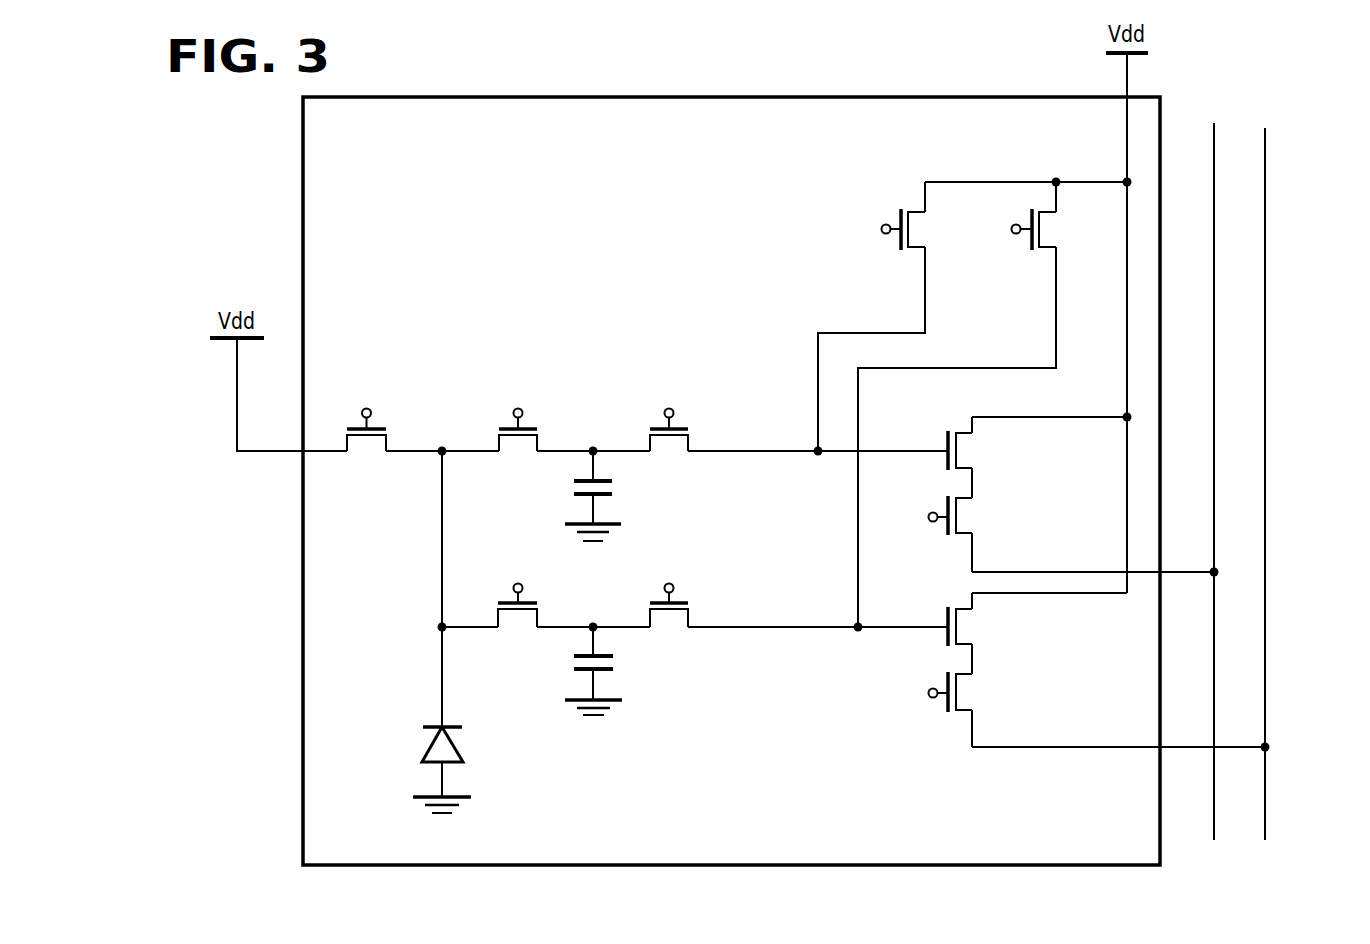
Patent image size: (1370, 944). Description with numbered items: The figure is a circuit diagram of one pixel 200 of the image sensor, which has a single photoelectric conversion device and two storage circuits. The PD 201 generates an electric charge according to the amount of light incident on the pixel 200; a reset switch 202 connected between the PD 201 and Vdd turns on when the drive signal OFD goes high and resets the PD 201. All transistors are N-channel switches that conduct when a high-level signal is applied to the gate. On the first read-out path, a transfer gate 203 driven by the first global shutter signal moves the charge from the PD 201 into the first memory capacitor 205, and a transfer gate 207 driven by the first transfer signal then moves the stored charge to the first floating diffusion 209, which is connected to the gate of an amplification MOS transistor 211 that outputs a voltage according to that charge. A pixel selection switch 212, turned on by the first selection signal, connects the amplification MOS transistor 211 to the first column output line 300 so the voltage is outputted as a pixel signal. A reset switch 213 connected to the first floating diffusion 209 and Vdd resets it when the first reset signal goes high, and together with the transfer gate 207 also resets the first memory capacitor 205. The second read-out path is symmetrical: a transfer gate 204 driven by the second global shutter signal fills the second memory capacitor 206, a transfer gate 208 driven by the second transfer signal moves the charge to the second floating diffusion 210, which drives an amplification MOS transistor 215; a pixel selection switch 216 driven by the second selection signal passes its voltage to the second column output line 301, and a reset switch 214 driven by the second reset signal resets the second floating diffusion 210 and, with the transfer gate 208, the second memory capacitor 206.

The pixel 200 is at (302, 820).
The PD 201 is at (410, 742).
The reset switch 202 is at (387, 431).
The transfer gate 203 is at (538, 431).
The transfer gate 204 is at (538, 607).
The MEM1 205 is at (622, 488).
The MEM2 206 is at (622, 664).
The transfer gate 207 is at (689, 432).
The transfer gate 208 is at (689, 607).
The FD1 209 is at (812, 447).
The FD2 210 is at (851, 622).
The amplification MOS transistor 211 is at (978, 452).
The pixel selection switch 212 is at (978, 518).
The reset switch 213 is at (912, 205).
The reset switch 214 is at (1048, 225).
The amplification MOS transistor 215 is at (978, 627).
The pixel selection switch 216 is at (978, 695).
The column output line VLINE1 300 is at (1215, 142).
The column output line VLINE2 301 is at (1267, 800).